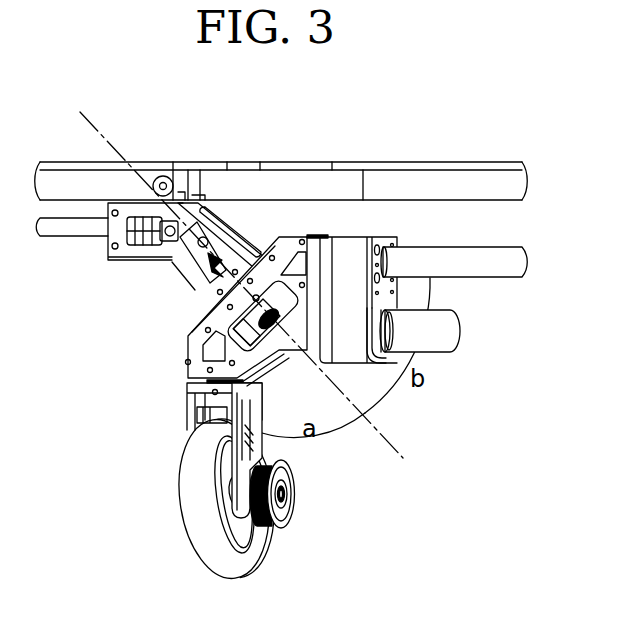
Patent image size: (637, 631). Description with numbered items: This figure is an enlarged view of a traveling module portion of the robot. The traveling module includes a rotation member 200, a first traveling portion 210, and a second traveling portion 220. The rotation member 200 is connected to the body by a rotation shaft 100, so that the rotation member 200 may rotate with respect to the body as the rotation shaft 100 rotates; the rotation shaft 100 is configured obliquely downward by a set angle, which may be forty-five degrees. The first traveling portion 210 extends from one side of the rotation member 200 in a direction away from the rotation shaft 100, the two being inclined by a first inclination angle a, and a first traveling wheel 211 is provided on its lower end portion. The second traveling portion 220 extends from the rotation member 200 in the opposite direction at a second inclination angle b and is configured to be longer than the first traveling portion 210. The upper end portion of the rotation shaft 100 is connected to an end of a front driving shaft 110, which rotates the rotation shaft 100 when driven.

The front driving shaft 110 is at (65, 228).
The rotation shaft 100 is at (203, 270).
The rotation member 200 is at (193, 345).
The first traveling portion 210 is at (190, 411).
The first traveling wheel 211 is at (190, 490).
The second traveling portion 220 is at (497, 278).